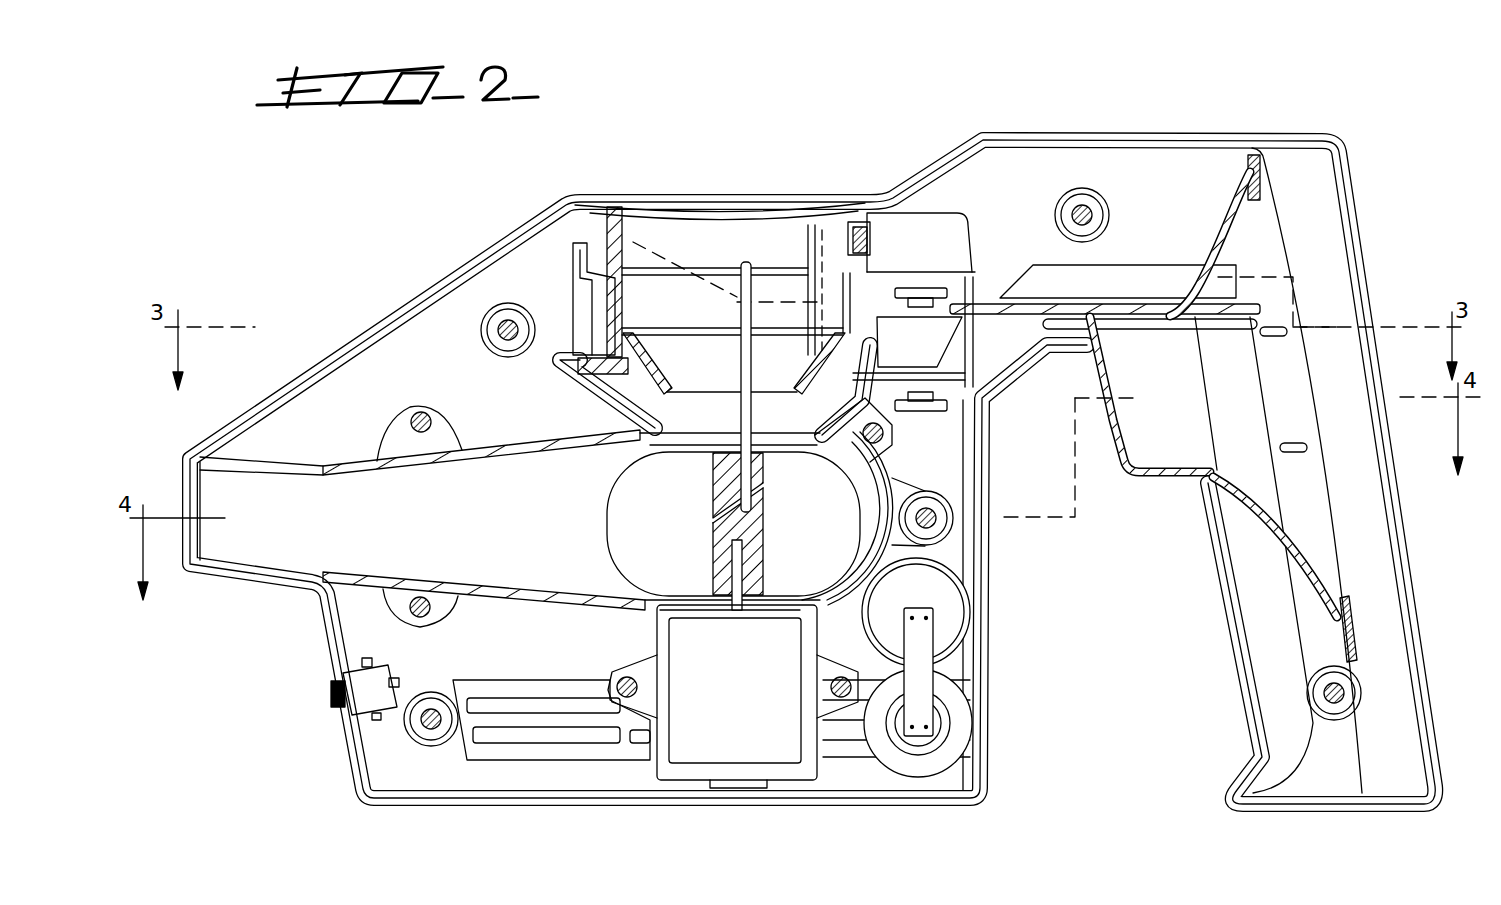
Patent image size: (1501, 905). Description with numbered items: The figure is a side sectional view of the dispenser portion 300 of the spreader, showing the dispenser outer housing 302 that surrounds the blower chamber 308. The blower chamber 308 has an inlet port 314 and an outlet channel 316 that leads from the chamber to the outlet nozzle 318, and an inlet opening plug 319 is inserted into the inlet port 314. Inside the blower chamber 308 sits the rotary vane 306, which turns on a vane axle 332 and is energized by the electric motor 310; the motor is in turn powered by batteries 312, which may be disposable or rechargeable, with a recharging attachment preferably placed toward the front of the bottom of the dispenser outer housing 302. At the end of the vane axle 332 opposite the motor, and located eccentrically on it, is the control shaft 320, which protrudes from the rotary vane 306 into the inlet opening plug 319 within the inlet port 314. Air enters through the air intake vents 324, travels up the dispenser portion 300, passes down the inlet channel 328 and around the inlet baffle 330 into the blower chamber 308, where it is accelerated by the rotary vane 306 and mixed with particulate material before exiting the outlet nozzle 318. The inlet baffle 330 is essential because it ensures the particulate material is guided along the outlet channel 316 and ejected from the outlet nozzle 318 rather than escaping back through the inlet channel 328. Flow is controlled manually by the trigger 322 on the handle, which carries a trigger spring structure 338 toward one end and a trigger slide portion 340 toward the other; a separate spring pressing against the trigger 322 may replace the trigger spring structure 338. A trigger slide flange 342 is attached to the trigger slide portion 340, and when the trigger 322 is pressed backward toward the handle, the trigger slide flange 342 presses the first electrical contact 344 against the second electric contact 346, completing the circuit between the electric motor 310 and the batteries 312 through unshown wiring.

The dispenser portion 300 is at (399, 265).
The dispenser outer housing 302 is at (455, 270).
The rotary vane 306 is at (640, 530).
The blower chamber 308 is at (858, 480).
The electric motor 310 is at (770, 740).
The batteries 312 is at (957, 650).
The inlet port 314 is at (705, 240).
The outlet channel 316 is at (313, 506).
The outlet nozzle 318 is at (207, 547).
The inlet opening plug 319 is at (572, 200).
The control shaft 320 is at (748, 417).
The trigger 322 is at (1130, 480).
The air intake vents 324 is at (750, 573).
The inlet channel 328 is at (603, 317).
The inlet baffle 330 is at (607, 377).
The vane axle 332 is at (710, 523).
The trigger spring structure 338 is at (1277, 520).
The trigger slide portion 340 is at (1113, 317).
The trigger slide flange 342 is at (900, 337).
The first electrical contact 344 is at (963, 380).
The second electric contact 346 is at (963, 388).